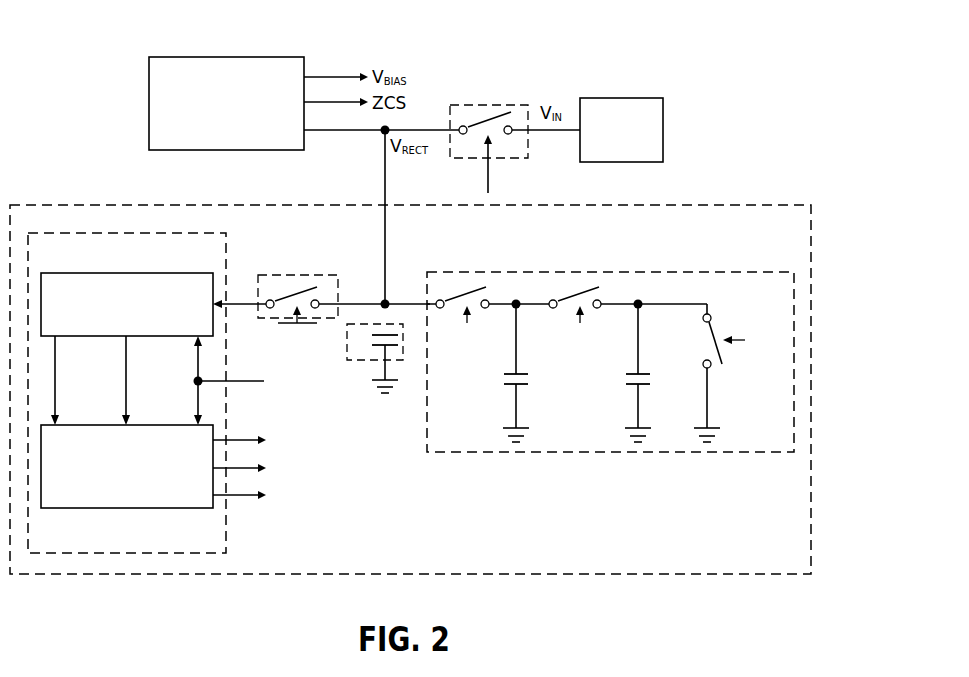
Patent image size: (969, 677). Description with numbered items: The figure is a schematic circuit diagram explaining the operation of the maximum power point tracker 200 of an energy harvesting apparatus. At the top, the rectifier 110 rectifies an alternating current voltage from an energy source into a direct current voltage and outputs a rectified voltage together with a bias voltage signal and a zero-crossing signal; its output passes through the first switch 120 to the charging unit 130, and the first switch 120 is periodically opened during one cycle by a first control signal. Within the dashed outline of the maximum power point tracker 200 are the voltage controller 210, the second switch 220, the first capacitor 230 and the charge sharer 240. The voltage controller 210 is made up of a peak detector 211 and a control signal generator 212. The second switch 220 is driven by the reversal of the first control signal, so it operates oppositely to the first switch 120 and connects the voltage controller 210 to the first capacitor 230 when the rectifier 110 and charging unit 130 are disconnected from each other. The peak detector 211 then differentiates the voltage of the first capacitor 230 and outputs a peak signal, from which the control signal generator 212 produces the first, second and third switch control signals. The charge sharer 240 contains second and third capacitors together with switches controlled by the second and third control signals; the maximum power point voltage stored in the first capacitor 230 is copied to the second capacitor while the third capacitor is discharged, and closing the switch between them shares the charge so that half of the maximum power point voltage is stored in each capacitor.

The rectifier 110 is at (280, 44).
The first switch 120 is at (505, 105).
The charging unit 130 is at (658, 85).
The maximum power point tracker 200 is at (750, 205).
The voltage controller 210 is at (226, 238).
The peak detector 211 is at (175, 273).
The control signal generator 212 is at (175, 508).
The second switch 220 is at (322, 275).
The first capacitor 230 is at (365, 360).
The charge sharer 240 is at (697, 272).